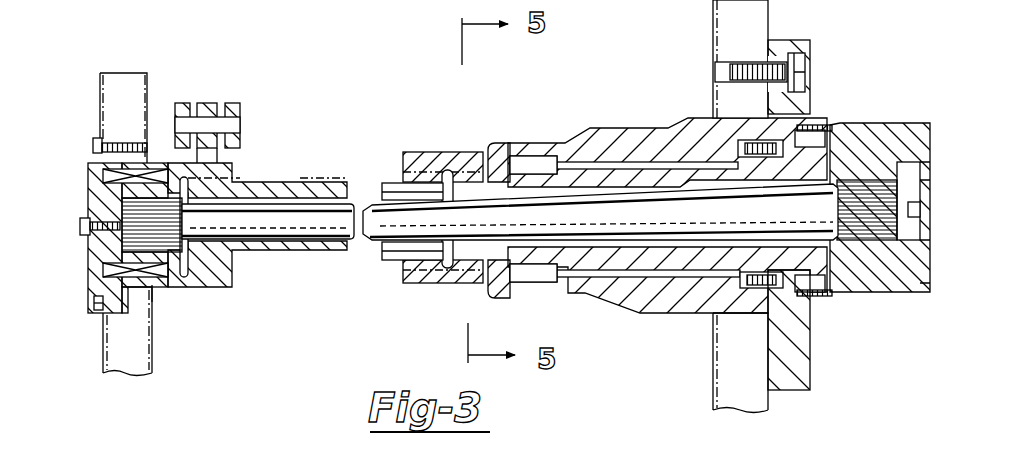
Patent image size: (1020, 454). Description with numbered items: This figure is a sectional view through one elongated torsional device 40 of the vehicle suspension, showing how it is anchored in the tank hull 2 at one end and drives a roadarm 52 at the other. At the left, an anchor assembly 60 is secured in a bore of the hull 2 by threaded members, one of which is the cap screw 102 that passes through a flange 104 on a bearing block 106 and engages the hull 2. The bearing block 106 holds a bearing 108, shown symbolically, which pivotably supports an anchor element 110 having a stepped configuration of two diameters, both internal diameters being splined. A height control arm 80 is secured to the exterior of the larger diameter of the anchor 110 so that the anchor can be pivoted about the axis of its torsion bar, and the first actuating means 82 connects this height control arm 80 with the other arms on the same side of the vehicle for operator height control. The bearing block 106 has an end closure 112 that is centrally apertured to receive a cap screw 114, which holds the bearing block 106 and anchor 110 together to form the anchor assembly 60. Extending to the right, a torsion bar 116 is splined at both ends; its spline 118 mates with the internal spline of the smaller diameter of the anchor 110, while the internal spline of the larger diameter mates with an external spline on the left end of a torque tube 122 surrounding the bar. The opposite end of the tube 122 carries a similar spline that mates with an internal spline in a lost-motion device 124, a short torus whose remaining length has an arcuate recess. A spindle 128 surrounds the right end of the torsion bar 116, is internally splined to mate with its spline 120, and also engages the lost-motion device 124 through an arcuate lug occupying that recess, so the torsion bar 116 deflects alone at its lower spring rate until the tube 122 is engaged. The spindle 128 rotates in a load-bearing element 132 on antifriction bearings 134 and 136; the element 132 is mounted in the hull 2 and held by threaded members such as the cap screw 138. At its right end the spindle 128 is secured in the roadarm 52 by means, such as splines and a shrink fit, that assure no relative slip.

The tank hull 2 is at (118, 73).
The elongated torsional device 40 is at (400, 252).
The roadarm 52 is at (926, 123).
The anchor assembly 60 is at (138, 296).
The height control arm 80 is at (203, 103).
The first actuating means 82 is at (182, 103).
The cap screw 102 is at (93, 146).
The flange 104 is at (118, 315).
The bearing block 106 is at (157, 160).
The bearing 108 is at (165, 288).
The anchor element 110 is at (232, 178).
The end closure 112 is at (88, 184).
The cap screw 114 is at (85, 228).
The torsion bar 116 is at (383, 188).
The spline 118 is at (170, 222).
The spline 120 is at (870, 228).
The torque tube 122 is at (298, 262).
The lost-motion device 124 is at (412, 152).
The spindle 128 is at (658, 165).
The load-bearing element 132 is at (655, 312).
The antifriction bearing 134 is at (540, 162).
The antifriction bearing 136 is at (780, 140).
The cap screw 138 is at (803, 72).